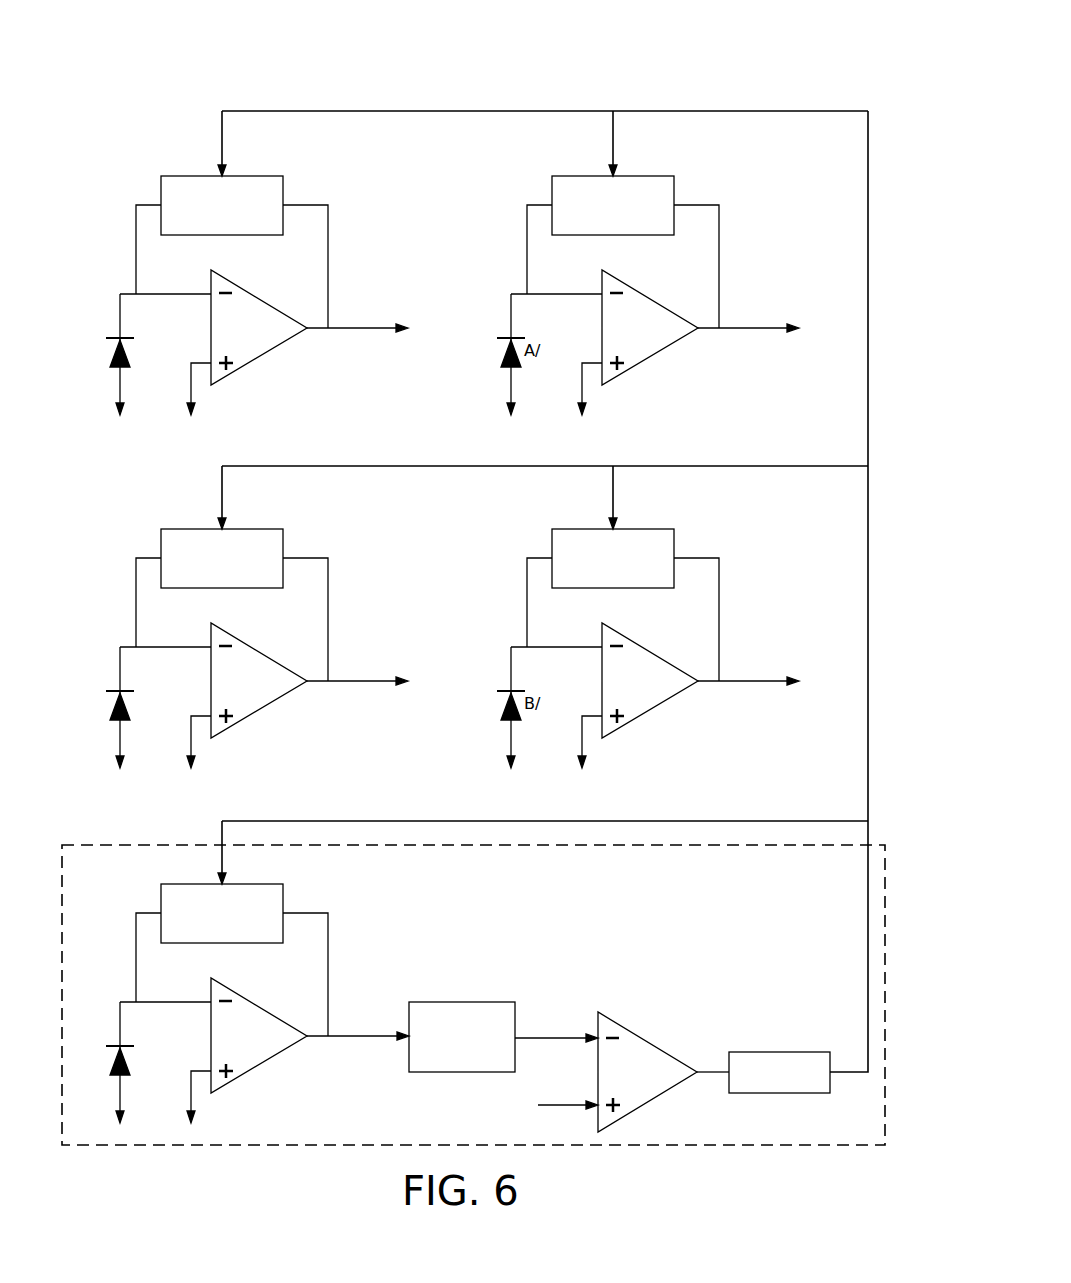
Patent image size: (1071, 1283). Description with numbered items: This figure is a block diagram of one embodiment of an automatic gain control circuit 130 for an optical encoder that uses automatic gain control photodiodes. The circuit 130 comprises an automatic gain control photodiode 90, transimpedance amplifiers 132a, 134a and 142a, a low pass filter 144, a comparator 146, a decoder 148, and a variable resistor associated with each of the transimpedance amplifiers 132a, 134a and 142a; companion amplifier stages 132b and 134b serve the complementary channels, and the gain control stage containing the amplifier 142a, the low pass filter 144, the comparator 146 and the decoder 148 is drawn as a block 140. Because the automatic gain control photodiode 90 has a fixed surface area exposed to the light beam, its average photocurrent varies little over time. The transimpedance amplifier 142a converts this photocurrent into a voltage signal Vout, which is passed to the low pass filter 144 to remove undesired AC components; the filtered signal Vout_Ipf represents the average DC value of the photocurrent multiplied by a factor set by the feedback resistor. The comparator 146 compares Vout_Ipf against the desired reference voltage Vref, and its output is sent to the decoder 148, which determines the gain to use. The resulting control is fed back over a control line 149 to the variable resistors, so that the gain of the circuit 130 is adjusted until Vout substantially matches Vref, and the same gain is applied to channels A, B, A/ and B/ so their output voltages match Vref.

The automatic gain control circuit 130 is at (725, 64).
The transimpedance amplifier 132a is at (333, 191).
The variable gain amplifier for detector A/ 132b is at (724, 191).
The transimpedance amplifier 134a is at (333, 544).
The variable gain amplifier for detector B/ 134b is at (724, 544).
The gain control circuit 140 is at (137, 845).
The transimpedance amplifier 142a is at (333, 906).
The automatic gain control photodiode 90 is at (110, 1091).
The low pass filter 144 is at (452, 1002).
The comparator 146 is at (648, 1042).
The decoder 148 is at (780, 1052).
The control feedback line 149 is at (868, 938).